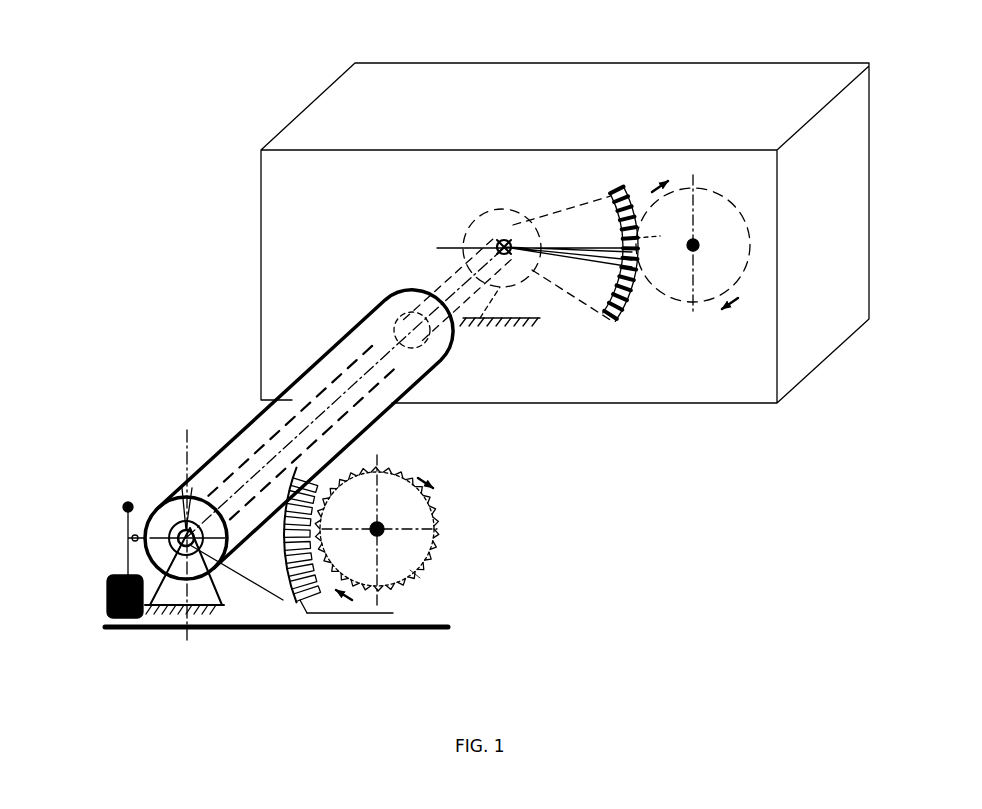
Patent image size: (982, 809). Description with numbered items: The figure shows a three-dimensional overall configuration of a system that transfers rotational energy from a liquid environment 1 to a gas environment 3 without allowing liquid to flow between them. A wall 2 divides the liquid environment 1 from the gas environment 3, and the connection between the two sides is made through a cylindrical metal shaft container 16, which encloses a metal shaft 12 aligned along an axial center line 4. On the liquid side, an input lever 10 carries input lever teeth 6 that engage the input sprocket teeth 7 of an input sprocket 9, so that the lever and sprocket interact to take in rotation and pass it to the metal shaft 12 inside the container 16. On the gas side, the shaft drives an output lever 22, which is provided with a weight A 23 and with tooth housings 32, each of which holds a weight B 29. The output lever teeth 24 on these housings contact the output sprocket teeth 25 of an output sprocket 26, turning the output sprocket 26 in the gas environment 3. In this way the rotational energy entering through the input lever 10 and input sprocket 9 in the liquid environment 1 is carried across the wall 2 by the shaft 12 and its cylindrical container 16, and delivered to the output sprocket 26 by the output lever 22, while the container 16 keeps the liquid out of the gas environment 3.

The liquid environment 1 is at (380, 189).
The wall 2 is at (258, 200).
The gas environment 3 is at (178, 228).
The axial center line 4 is at (298, 425).
The input lever teeth 6 is at (618, 326).
The input sprocket teeth 7 is at (650, 287).
The input sprocket 9 is at (672, 288).
The input lever 10 is at (573, 279).
The metal shaft 12 is at (268, 438).
The cylindrical metal shaft container 16 is at (258, 417).
The output lever 22 is at (273, 528).
The weight A 23 is at (115, 578).
The output lever teeth 24 is at (305, 556).
The output sprocket teeth 25 is at (417, 575).
The output sprocket 26 is at (403, 503).
The weight B in each tooth housing 29 is at (380, 610).
The tooth housings 32 is at (281, 600).